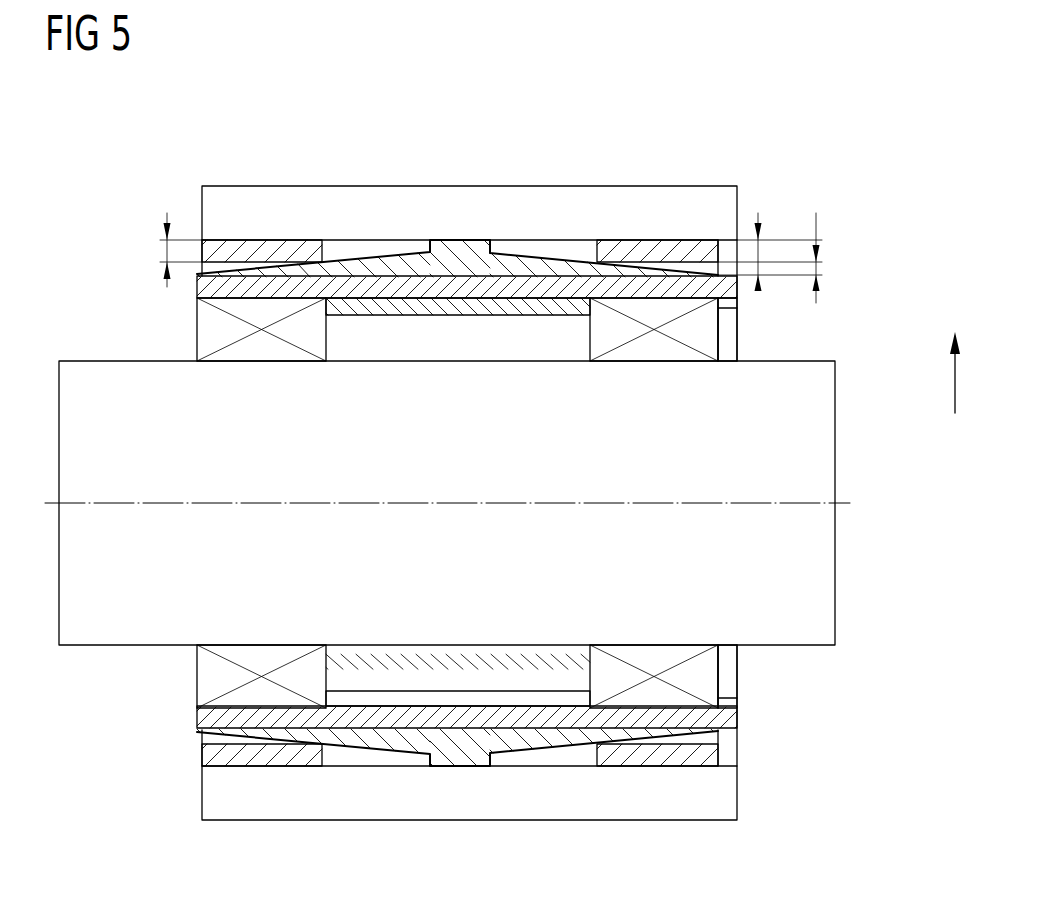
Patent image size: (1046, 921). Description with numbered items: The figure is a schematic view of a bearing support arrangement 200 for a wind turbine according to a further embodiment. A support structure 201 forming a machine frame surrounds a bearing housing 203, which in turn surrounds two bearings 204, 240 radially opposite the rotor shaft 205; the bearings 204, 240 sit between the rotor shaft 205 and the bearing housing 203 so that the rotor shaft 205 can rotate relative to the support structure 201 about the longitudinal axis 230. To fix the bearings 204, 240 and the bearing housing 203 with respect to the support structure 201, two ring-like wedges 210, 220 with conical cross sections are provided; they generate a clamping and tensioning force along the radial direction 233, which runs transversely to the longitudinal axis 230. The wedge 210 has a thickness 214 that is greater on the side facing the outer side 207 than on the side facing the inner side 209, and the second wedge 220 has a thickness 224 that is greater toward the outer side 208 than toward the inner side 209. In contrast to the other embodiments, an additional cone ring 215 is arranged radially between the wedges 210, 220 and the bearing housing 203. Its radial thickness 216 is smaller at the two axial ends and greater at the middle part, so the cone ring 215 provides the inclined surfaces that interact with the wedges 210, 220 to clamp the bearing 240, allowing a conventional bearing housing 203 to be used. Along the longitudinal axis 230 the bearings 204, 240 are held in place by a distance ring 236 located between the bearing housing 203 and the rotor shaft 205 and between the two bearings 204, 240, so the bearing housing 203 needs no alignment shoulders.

The bearing support arrangement 200 is at (808, 108).
The support structure 201 is at (613, 196).
The bearing housing 203 is at (730, 288).
The bearing 204 is at (205, 330).
The rotor shaft 205 is at (826, 456).
The outer side 207 is at (176, 182).
The outer side 208 is at (826, 170).
The inner side 209 is at (494, 232).
The wedge 210 is at (256, 256).
The thickness 214 is at (163, 253).
The cone ring 215 is at (533, 267).
The radial thickness 216 is at (818, 268).
The second wedge 220 is at (692, 252).
The thickness 224 is at (762, 249).
The longitudinal axis 230 is at (500, 508).
The radial direction 233 is at (955, 376).
The distance ring 236 is at (387, 308).
The bearing 240 is at (722, 335).